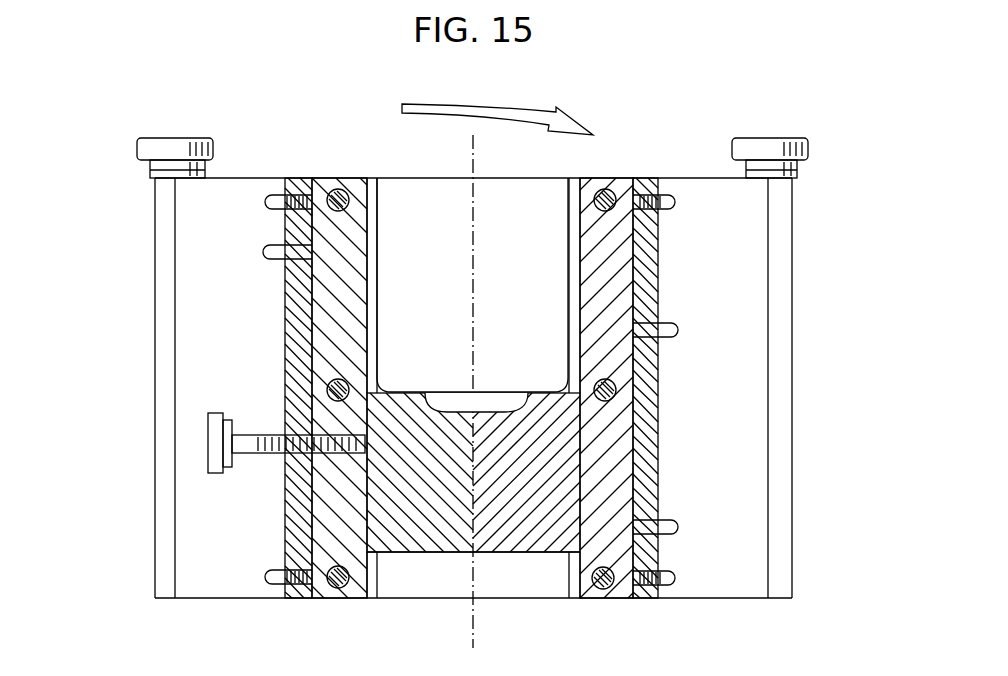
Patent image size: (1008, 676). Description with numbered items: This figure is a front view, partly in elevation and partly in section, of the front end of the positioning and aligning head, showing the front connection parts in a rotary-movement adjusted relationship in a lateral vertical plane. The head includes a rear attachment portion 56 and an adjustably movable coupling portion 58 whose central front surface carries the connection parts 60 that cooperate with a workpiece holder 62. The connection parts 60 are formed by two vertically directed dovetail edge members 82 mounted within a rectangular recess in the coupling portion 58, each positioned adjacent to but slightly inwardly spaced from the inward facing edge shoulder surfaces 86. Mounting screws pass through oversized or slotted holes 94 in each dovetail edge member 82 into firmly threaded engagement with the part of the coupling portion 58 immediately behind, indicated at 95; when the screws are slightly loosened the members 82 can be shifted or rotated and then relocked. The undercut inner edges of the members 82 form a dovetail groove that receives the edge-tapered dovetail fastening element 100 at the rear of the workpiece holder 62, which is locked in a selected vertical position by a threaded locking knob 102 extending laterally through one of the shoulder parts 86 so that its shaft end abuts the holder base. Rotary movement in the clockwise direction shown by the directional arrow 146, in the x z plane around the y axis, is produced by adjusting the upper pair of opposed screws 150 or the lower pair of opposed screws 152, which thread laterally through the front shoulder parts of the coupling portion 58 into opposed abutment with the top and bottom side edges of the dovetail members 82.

The rear attachment portion 56 is at (150, 297).
The adjustably movable coupling portion 58 is at (208, 364).
The connection parts 60 is at (372, 235).
The workpiece holder 62 is at (488, 560).
The dovetail edge member 82 is at (630, 278).
The edge shoulder surface 86 is at (312, 227).
The oversized hole 94 is at (373, 198).
The threaded engagement part 95 is at (344, 189).
The dovetail-cooperable fastening element 100 is at (418, 391).
The locking knob 102 is at (212, 472).
The directional arrow 146 is at (470, 106).
The upper translatory-opposed movement causing screws 150 is at (262, 200).
The lower translatory-opposed movement causing screws 152 is at (262, 578).